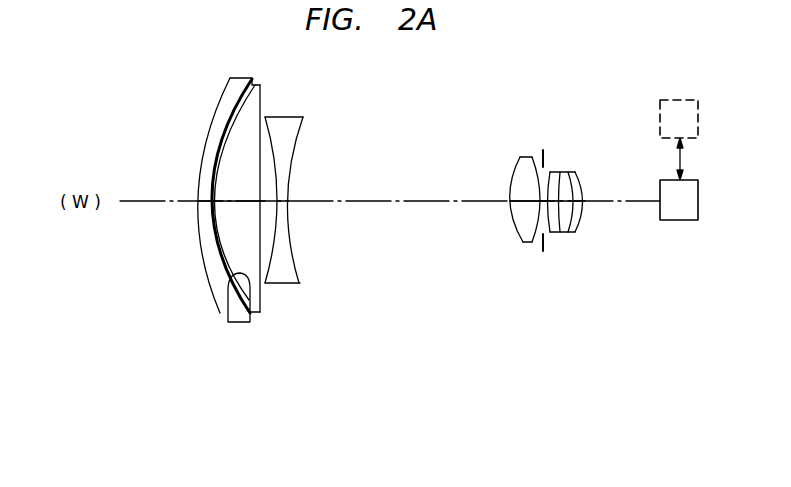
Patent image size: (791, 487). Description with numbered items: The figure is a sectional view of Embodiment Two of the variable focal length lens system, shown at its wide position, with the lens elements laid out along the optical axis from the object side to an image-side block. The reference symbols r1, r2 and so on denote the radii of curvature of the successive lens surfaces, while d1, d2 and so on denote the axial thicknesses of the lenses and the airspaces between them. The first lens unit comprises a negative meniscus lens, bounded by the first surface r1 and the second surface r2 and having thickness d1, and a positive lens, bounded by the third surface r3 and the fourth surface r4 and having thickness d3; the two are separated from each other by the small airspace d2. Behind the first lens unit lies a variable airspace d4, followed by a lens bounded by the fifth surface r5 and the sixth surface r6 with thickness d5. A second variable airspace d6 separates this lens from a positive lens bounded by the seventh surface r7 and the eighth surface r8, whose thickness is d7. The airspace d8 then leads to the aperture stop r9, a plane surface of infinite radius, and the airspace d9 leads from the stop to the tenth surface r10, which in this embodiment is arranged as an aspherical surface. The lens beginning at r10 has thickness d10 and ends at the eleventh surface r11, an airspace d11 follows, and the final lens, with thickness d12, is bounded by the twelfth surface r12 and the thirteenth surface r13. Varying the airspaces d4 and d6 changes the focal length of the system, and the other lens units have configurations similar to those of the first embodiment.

The first lens surface r1 is at (221, 314).
The second lens surface r2 is at (234, 323).
The third lens surface r3 is at (252, 323).
The fourth lens surface r4 is at (268, 310).
The fifth lens surface r5 is at (266, 285).
The sixth lens surface r6 is at (301, 268).
The seventh lens surface r7 is at (519, 234).
The eighth lens surface r8 is at (527, 244).
The stop r9 is at (543, 252).
The tenth lens surface r10 is at (549, 234).
The eleventh lens surface r11 is at (562, 234).
The twelfth lens surface r12 is at (571, 234).
The thirteenth lens surface r13 is at (582, 233).
The first lens thickness d1 is at (203, 199).
The first airspace d2 is at (212, 203).
The second lens thickness d3 is at (233, 201).
The variable airspace D1 d4 is at (261, 203).
The third lens thickness d5 is at (279, 199).
The variable airspace D2 d6 is at (398, 199).
The fourth lens thickness d7 is at (513, 199).
The airspace before stop d8 is at (538, 200).
The airspace after stop d9 is at (548, 201).
The fifth lens thickness d10 is at (557, 200).
The airspace between rear lenses d11 is at (575, 200).
The sixth lens thickness d12 is at (583, 200).